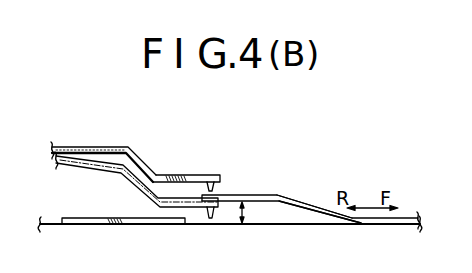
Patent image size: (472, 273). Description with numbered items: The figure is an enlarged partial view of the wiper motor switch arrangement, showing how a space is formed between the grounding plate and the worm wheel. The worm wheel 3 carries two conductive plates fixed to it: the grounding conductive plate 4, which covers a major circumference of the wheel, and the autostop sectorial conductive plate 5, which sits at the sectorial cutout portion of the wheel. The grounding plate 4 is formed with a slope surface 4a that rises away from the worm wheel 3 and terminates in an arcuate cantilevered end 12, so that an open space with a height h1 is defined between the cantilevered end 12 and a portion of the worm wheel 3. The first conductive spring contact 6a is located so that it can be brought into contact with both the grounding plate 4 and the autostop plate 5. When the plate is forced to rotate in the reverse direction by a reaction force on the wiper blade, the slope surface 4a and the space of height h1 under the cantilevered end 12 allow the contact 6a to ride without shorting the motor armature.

The worm wheel 3 is at (318, 226).
The grounding conductive plate 4 is at (402, 218).
The slope surface 4a is at (306, 203).
The autostop sectorial conductive plate 5 is at (105, 216).
The first conductive spring contact 6a is at (209, 175).
The arcuate cantilevered end 12 is at (168, 177).
The height h1 is at (246, 214).